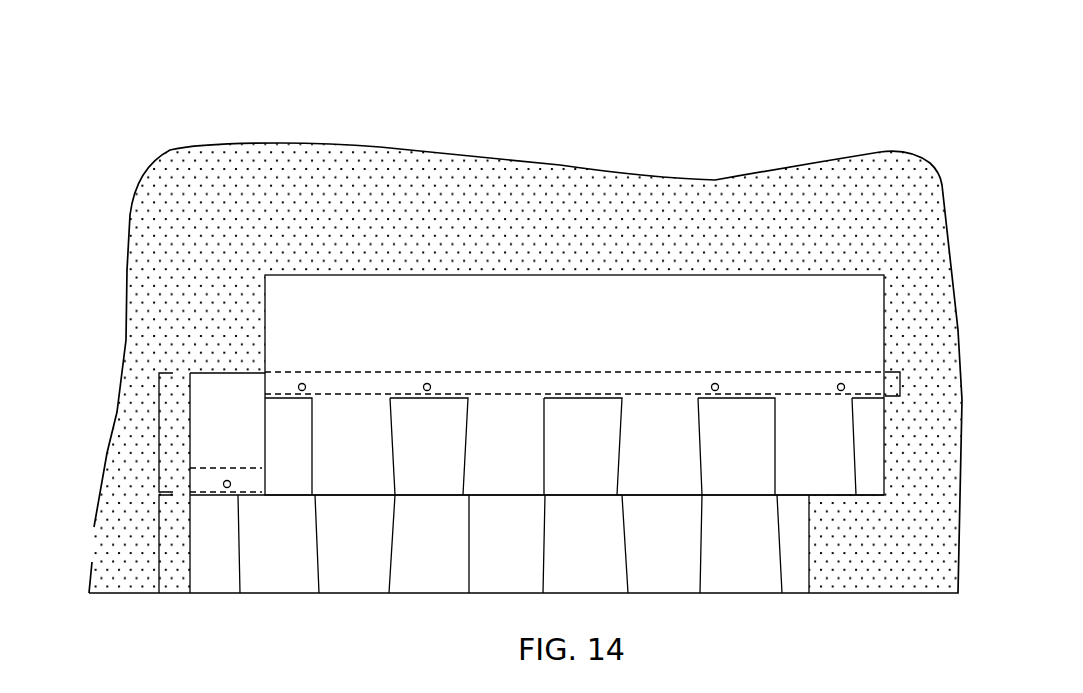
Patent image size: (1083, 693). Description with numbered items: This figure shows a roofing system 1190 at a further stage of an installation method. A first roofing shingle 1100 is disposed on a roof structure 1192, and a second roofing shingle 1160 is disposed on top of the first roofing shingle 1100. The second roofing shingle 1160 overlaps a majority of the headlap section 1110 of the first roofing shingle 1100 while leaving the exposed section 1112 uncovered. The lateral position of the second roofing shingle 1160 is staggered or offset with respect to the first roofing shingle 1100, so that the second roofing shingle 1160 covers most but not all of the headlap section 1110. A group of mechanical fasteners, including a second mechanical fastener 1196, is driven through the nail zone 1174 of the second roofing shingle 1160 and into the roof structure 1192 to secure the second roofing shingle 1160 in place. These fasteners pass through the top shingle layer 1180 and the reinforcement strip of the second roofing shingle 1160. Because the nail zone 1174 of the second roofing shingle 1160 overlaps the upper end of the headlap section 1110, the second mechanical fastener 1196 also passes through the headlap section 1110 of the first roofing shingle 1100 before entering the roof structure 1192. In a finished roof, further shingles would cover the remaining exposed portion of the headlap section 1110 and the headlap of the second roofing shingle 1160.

The roofing system 1190 is at (170, 148).
The roof structure 1192 is at (575, 197).
The first roofing shingle 1100 is at (177, 367).
The headlap section 1110 is at (159, 432).
The exposed section 1112 is at (159, 543).
The second roofing shingle 1160 is at (307, 268).
The top shingle layer 1180 is at (620, 349).
The second mechanical fastener 1196 is at (302, 383).
The nail zone 1174 is at (900, 384).